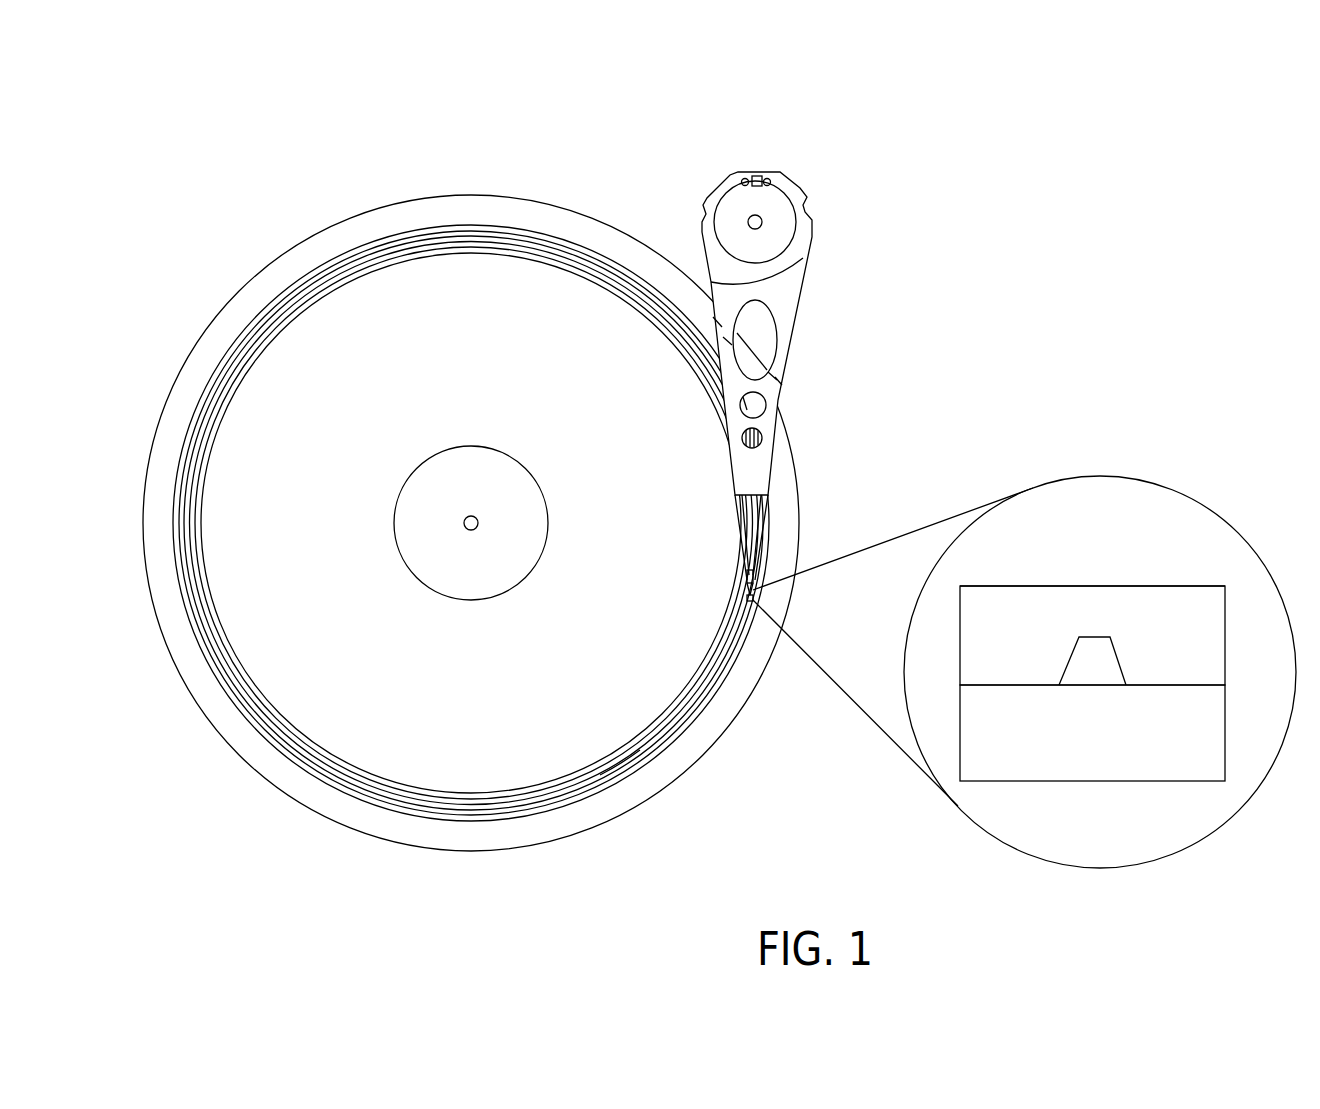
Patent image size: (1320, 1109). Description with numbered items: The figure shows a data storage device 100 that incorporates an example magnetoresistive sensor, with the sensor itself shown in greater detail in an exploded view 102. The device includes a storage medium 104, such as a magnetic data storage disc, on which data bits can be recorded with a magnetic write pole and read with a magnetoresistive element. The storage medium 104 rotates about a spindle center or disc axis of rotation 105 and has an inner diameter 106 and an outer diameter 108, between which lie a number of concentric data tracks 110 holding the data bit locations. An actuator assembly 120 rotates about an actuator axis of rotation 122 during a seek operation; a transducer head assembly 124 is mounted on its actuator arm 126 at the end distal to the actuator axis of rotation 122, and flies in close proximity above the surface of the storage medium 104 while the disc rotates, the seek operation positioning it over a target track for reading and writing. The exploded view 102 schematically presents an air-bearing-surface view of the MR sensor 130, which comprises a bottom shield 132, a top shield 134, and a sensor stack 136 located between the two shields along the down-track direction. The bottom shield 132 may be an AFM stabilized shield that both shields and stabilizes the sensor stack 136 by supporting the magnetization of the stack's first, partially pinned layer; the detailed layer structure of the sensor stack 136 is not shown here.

The data storage device 100 is at (214, 174).
The exploded view 102 is at (1098, 475).
The storage medium 104 is at (543, 205).
The disc axis of rotation 105 is at (465, 520).
The inner diameter 106 is at (440, 452).
The outer diameter 108 is at (348, 247).
The data tracks 110 is at (640, 750).
The actuator assembly 120 is at (820, 306).
The actuator axis of rotation 122 is at (763, 219).
The transducer head assembly 124 is at (758, 597).
The actuator arm 126 is at (738, 522).
The MR sensor 130 is at (1176, 563).
The bottom shield 132 is at (1155, 755).
The top shield 134 is at (993, 608).
The sensor stack 136 is at (1085, 655).